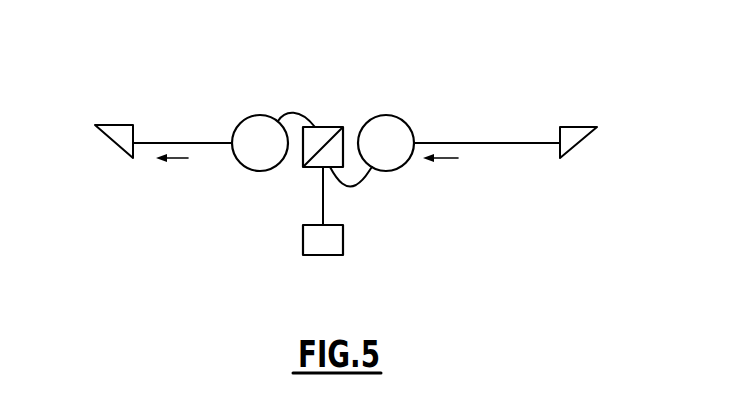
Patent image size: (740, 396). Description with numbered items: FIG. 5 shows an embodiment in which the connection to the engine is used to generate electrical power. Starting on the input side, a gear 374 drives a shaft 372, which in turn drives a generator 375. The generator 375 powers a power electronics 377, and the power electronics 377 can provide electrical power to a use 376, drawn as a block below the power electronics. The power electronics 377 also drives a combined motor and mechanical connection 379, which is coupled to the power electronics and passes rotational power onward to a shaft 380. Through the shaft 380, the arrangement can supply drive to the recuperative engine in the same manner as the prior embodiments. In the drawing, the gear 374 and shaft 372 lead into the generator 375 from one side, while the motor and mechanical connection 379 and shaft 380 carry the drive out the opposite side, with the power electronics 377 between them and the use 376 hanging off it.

The shaft 372 is at (443, 142).
The gear 374 is at (569, 137).
The generator 375 is at (398, 170).
The use 376 is at (318, 255).
The power electronics 377 is at (303, 150).
The combined motor and mechanical connection 379 is at (243, 119).
The shaft 380 is at (146, 146).